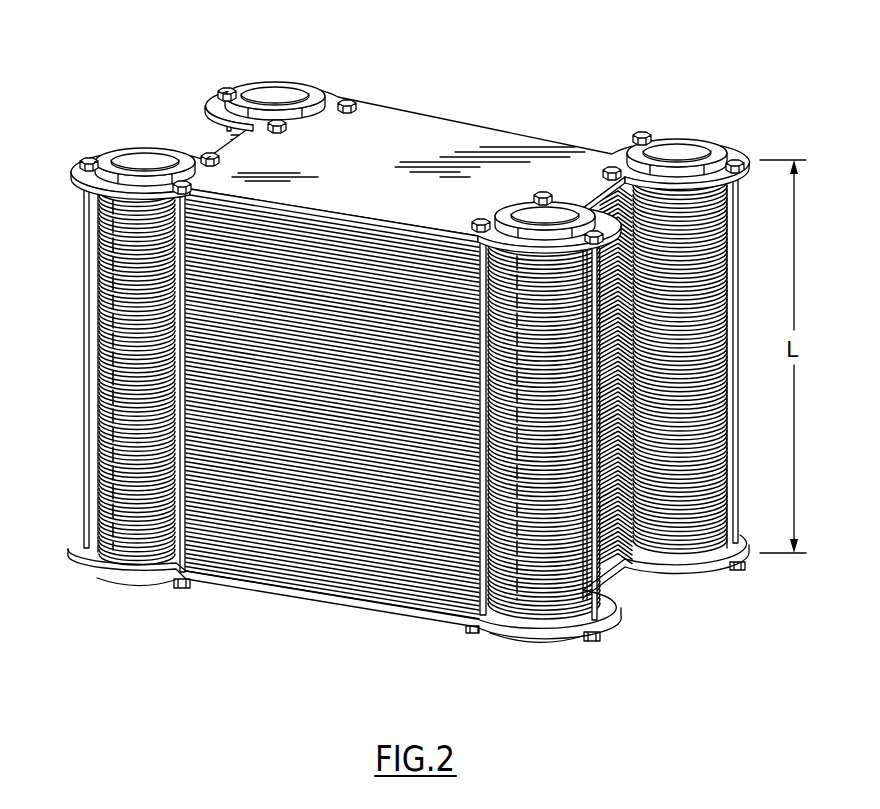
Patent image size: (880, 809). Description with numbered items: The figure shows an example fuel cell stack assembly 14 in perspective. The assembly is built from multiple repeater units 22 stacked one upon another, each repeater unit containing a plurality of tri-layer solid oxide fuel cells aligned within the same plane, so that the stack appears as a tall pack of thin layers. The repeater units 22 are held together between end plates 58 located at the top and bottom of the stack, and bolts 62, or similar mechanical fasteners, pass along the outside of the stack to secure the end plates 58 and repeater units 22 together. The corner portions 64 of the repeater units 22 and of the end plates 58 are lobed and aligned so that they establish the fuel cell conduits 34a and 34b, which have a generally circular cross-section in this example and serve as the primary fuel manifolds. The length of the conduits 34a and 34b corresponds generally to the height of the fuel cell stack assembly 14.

The fuel cell stack assembly 14 is at (423, 328).
The repeater units 22 is at (104, 217).
The fuel cell conduit 34a is at (106, 334).
The fuel cell conduit 34b is at (280, 95).
The end plates 58 is at (88, 181).
The bolts 62 is at (82, 271).
The corner portions 64 is at (330, 80).